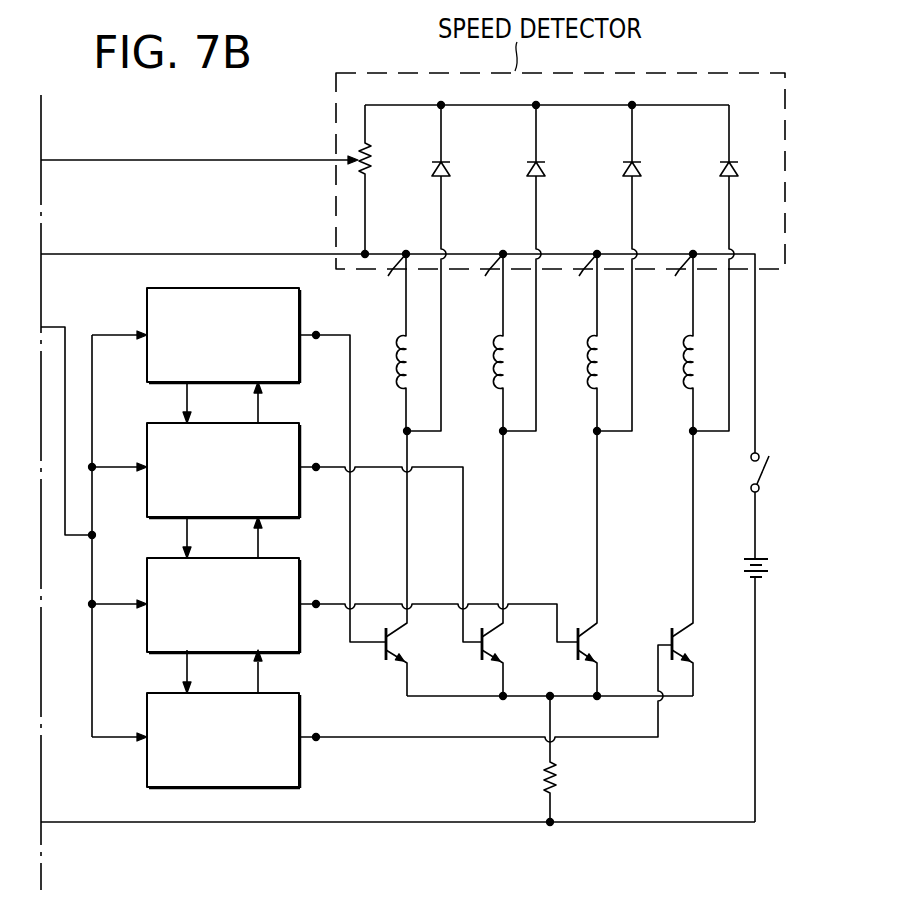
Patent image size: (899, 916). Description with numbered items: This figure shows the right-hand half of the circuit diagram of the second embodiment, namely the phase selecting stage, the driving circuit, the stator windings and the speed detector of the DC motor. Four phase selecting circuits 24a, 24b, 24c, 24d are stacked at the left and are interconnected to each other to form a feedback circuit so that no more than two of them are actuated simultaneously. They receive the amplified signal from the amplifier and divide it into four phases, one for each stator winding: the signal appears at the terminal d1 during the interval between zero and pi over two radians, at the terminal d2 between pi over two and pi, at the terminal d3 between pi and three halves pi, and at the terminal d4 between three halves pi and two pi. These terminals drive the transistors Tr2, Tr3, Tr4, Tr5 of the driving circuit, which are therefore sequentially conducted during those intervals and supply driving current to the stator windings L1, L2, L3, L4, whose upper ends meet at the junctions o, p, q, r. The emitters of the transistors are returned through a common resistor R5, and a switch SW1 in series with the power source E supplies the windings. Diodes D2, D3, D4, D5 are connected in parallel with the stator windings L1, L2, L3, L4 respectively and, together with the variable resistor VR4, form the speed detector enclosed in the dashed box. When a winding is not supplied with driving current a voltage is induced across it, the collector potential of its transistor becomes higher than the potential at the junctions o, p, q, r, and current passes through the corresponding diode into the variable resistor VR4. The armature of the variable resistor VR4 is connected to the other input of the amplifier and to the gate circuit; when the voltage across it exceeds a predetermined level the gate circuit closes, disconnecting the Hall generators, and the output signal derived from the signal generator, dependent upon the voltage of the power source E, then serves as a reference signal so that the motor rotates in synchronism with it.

The phase selecting circuit 24a is at (149, 286).
The phase selecting circuit 24b is at (152, 421).
The phase selecting circuit 24c is at (152, 556).
The phase selecting circuit 24d is at (152, 691).
The output terminal d1 is at (316, 339).
The output terminal d2 is at (316, 471).
The output terminal d3 is at (316, 608).
The output terminal d4 is at (316, 741).
The variable resistor VR4 is at (372, 158).
The diode D2 is at (453, 172).
The diode D3 is at (549, 172).
The diode D4 is at (644, 172).
The diode D5 is at (739, 172).
The junction of stator winding o is at (391, 276).
The junction of stator winding p is at (494, 276).
The junction of stator winding q is at (587, 276).
The junction of stator winding r is at (680, 275).
The stator winding L1 is at (397, 360).
The stator winding L2 is at (492, 360).
The stator winding L3 is at (587, 360).
The stator winding L4 is at (683, 360).
The transistor Tr2 is at (411, 652).
The transistor Tr3 is at (508, 652).
The transistor Tr4 is at (588, 642).
The transistor Tr5 is at (683, 642).
The resistor R5 is at (579, 759).
The switch SW1 is at (761, 470).
The power source E is at (742, 569).